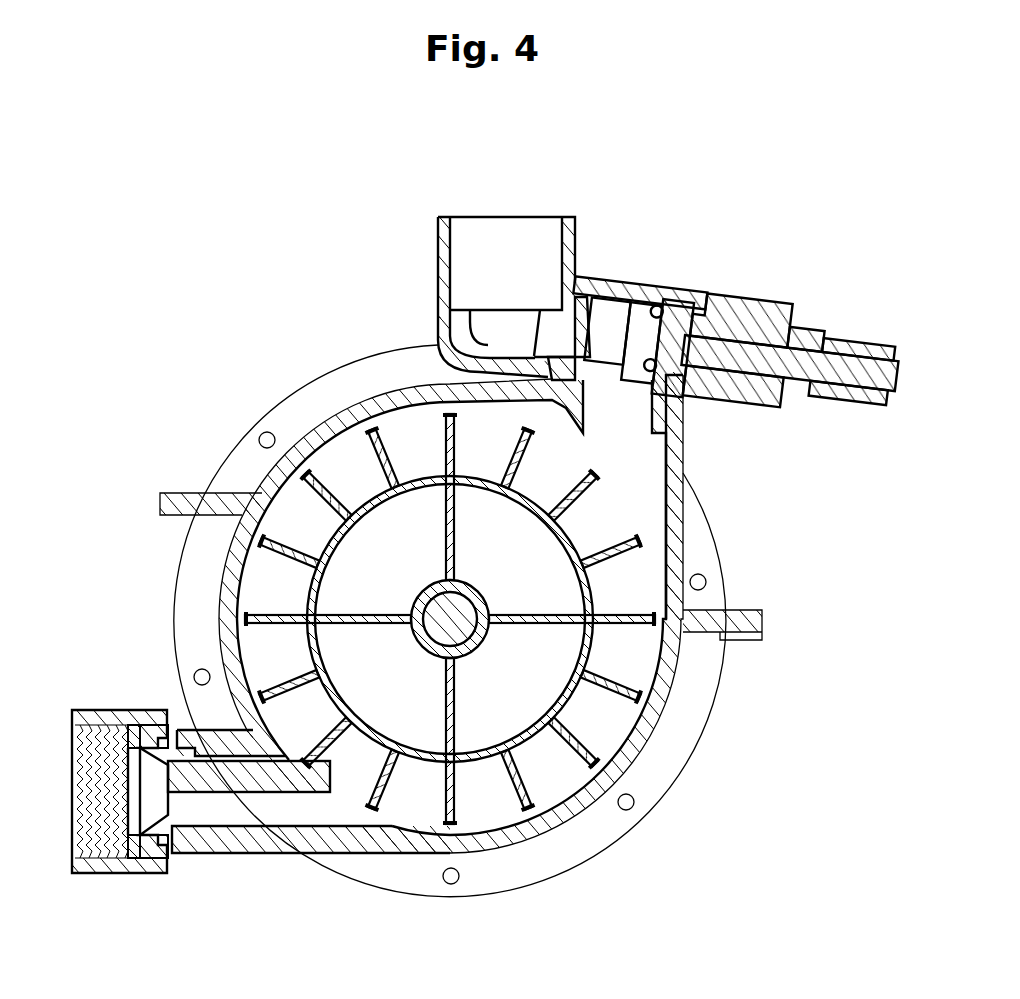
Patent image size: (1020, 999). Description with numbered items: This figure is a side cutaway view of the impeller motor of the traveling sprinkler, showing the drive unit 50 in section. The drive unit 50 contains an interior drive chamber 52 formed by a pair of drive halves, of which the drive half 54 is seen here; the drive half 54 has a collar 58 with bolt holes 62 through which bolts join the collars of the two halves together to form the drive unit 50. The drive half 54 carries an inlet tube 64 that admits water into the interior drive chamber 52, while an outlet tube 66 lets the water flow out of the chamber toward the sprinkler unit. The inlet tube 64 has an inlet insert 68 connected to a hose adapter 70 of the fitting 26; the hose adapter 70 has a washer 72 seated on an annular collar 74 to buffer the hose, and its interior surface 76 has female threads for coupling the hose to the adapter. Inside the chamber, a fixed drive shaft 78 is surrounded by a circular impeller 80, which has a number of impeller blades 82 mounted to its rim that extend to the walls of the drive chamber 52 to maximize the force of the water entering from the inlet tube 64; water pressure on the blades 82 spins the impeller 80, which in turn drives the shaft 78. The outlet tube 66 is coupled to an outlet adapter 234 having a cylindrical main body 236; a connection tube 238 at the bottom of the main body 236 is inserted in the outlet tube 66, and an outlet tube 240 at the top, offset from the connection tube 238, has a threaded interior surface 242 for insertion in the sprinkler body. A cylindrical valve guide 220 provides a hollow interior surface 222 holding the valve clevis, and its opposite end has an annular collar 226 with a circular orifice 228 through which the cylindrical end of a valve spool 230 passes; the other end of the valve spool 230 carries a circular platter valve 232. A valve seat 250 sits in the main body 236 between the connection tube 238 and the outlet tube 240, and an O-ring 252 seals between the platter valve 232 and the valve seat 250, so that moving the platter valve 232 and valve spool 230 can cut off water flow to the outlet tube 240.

The inlet fitting assembly 26 is at (63, 712).
The drive unit 50 is at (325, 363).
The interior drive chamber 52 is at (337, 452).
The drive half 54 is at (225, 456).
The collar 58 is at (373, 358).
The bolt holes 62 is at (258, 436).
The inlet tube 64 is at (250, 840).
The outlet tube 66 is at (688, 468).
The inlet insert 68 is at (200, 830).
The hose adapter 70 is at (120, 876).
The washer 72 is at (132, 740).
The annular collar 74 is at (145, 727).
The interior surface 76 is at (80, 737).
The fixed drive shaft 78 is at (466, 638).
The circular impeller 80 is at (518, 740).
The impeller blades 82 is at (598, 745).
The cylindrical valve guide 220 is at (870, 338).
The hollow interior surface 222 is at (860, 403).
The annular collar 226 is at (807, 323).
The circular orifice 228 is at (773, 345).
The valve spool 230 is at (835, 360).
The circular platter valve 232 is at (662, 328).
The outlet adapter 234 is at (622, 300).
The cylindrical main body 236 is at (632, 305).
The connection tube 238 is at (674, 427).
The outlet tube 240 is at (437, 240).
The threaded interior surface 242 is at (466, 230).
The valve seat 250 is at (586, 318).
The O-ring 252 is at (663, 310).